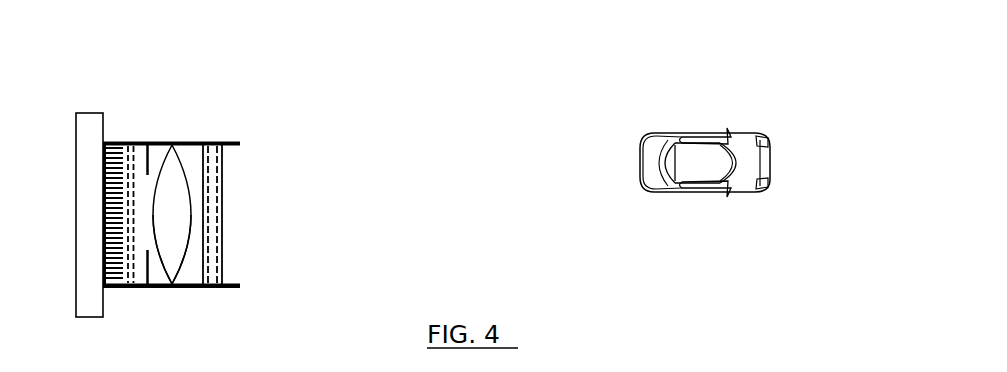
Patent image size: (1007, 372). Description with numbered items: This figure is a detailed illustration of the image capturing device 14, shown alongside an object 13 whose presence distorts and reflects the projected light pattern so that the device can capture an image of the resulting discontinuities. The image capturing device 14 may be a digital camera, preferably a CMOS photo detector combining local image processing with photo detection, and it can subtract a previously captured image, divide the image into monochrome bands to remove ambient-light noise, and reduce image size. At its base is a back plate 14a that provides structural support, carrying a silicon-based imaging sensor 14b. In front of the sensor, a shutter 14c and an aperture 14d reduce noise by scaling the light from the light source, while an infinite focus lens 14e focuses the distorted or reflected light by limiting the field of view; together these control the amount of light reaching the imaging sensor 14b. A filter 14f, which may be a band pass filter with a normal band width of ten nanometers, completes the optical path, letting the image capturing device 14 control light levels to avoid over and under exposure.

The object 13 is at (693, 135).
The image capturing device 14 is at (293, 60).
The back plate 14a is at (85, 122).
The imaging sensor 14b is at (115, 142).
The shutter 14c is at (127, 290).
The aperture 14d is at (157, 170).
The infinite focus lens 14e is at (162, 290).
The filter 14f is at (217, 168).